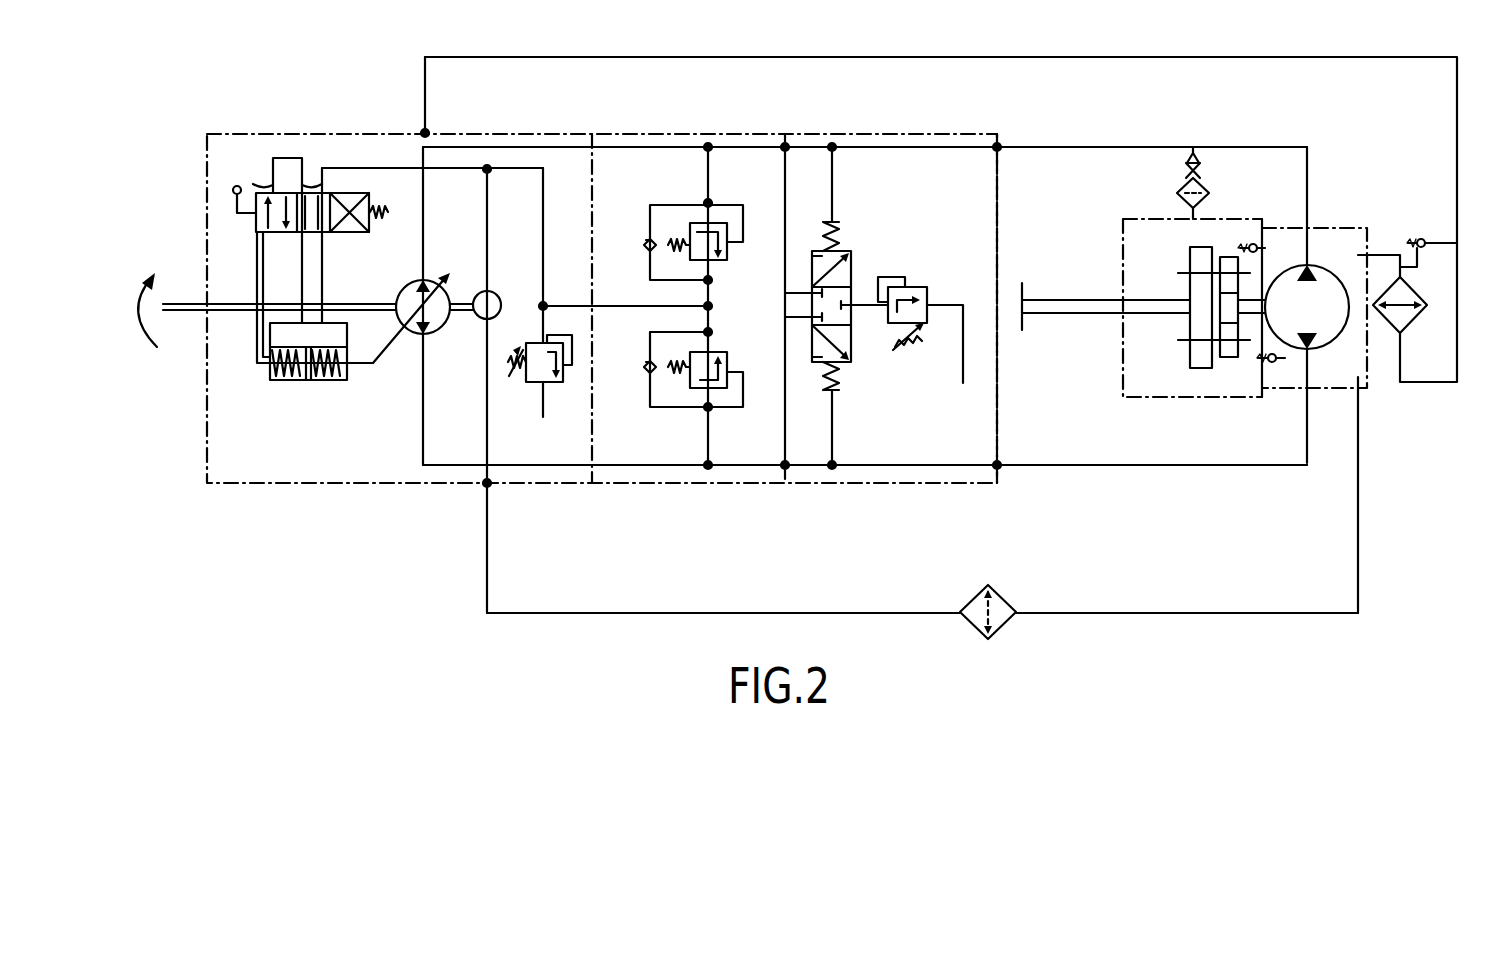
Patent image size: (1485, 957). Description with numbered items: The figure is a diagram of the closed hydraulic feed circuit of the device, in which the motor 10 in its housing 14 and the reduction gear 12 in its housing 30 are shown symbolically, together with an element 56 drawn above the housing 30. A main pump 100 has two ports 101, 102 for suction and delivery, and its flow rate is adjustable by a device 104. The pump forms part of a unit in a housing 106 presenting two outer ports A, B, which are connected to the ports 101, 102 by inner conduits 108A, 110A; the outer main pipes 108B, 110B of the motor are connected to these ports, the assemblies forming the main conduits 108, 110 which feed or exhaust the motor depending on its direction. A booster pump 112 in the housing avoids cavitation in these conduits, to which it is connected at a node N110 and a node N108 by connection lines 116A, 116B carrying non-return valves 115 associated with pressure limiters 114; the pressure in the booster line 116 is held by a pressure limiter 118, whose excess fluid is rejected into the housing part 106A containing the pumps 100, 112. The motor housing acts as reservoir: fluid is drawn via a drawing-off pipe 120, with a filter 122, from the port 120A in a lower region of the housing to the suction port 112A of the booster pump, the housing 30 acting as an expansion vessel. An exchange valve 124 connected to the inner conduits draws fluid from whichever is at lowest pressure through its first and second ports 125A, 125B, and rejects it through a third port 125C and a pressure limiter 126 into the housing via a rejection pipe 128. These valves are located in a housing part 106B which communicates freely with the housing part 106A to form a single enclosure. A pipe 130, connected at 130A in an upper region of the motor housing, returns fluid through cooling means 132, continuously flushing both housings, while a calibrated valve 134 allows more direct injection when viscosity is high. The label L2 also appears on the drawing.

The motor 10 is at (1318, 318).
The reduction gear 12 is at (1160, 249).
The housing of the motor 14 is at (1372, 378).
The housing of the reduction gear 30 is at (1195, 397).
The breather filter 56 is at (1200, 185).
The main pump 100 is at (398, 290).
The port 101 is at (413, 335).
The port 102 is at (440, 280).
The device 104 is at (330, 382).
The housing 106 is at (598, 120).
The housing part 106A is at (430, 483).
The housing part 106B is at (800, 133).
The main conduit 108 is at (1140, 486).
The inner conduit 108A is at (880, 467).
The main pipe 108B is at (1056, 466).
The main conduit 110 is at (1014, 125).
The inner conduit 110A is at (903, 133).
The main pipe 110B is at (1140, 146).
The booster pump 112 is at (498, 292).
The suction port 112A is at (480, 318).
The pressure limiter 114 is at (700, 225).
The non-return valve 115 is at (642, 256).
The booster line 116 is at (543, 196).
The connection line 116A is at (708, 176).
The connection line 116B is at (712, 437).
The pressure limiter 118 is at (530, 383).
The drawing-off pipe 120 is at (815, 610).
The port 120A is at (1358, 385).
The filter 122 is at (1005, 595).
The exchange valve 124 is at (850, 268).
The first port 125A is at (810, 318).
The second port 125B is at (810, 292).
The third port 125C is at (853, 305).
The pressure limiter 126 is at (920, 287).
The rejection pipe 128 is at (963, 368).
The pipe 130 is at (878, 57).
The connection 130A is at (1378, 248).
The cooling means 132 is at (1415, 330).
The calibrated valve 134 is at (1415, 243).
The node N108 is at (706, 470).
The node N110 is at (709, 140).
The line L2 is at (442, 121).
The outer port A is at (1000, 462).
The outer port B is at (999, 150).